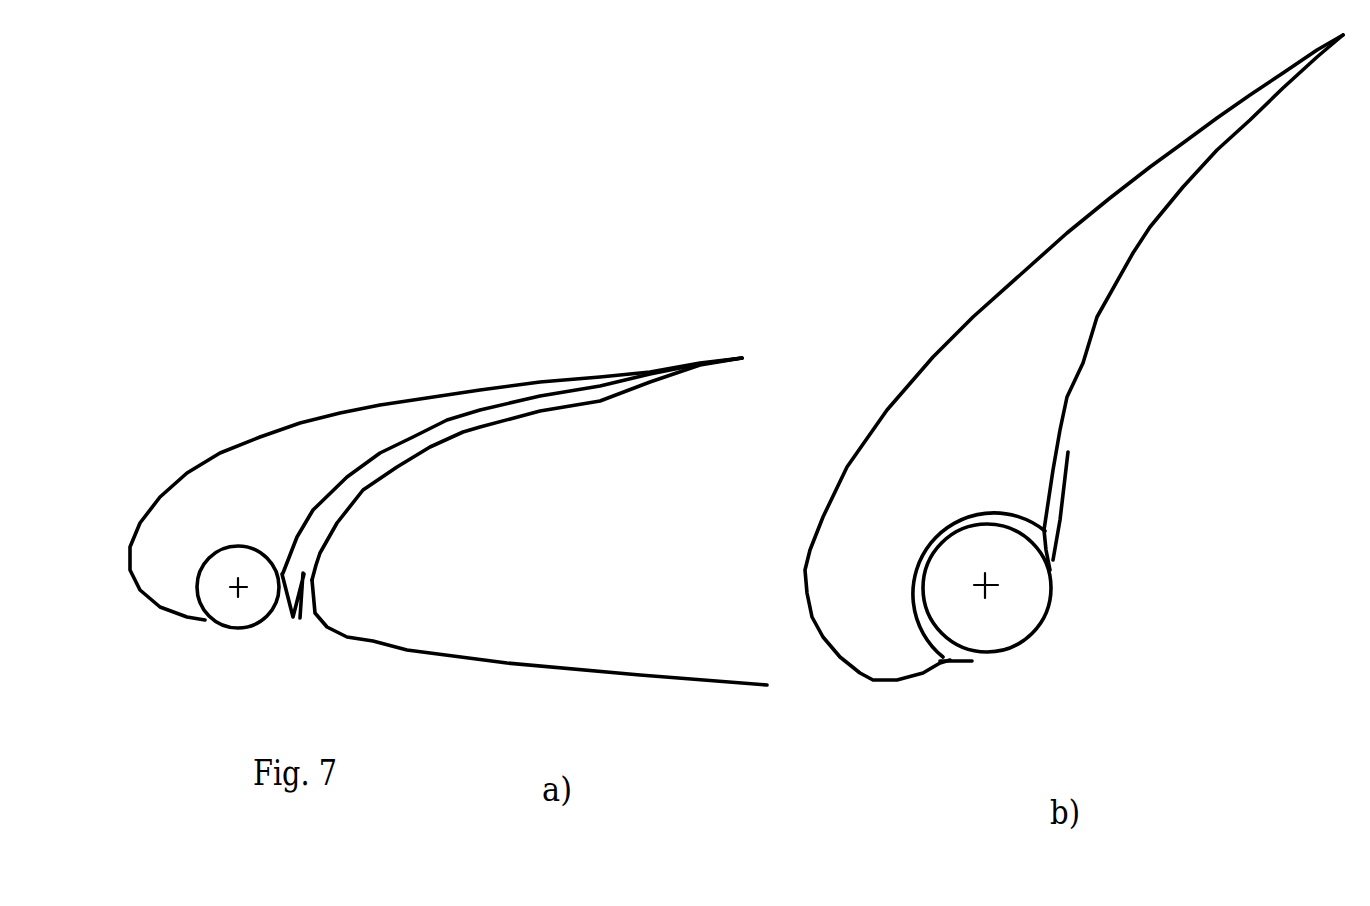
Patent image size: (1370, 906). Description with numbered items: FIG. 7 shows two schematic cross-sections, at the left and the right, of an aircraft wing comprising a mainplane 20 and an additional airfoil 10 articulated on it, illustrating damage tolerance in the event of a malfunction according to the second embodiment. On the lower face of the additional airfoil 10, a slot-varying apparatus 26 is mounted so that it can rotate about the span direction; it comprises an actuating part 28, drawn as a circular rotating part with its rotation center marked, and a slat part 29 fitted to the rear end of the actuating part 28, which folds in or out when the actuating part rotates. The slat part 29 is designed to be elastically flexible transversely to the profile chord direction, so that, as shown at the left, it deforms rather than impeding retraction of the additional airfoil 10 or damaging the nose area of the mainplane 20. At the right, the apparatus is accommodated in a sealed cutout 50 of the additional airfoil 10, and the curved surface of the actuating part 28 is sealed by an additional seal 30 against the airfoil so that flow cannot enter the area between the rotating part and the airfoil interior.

The additional airfoil 10 is at (288, 494).
The mainplane 20 is at (562, 561).
The slot-varying apparatus 26 is at (258, 723).
The actuating part 28 is at (227, 627).
The slat part 29 is at (292, 622).
The additional seal 30 is at (962, 667).
The sealed cutout 50 is at (933, 523).